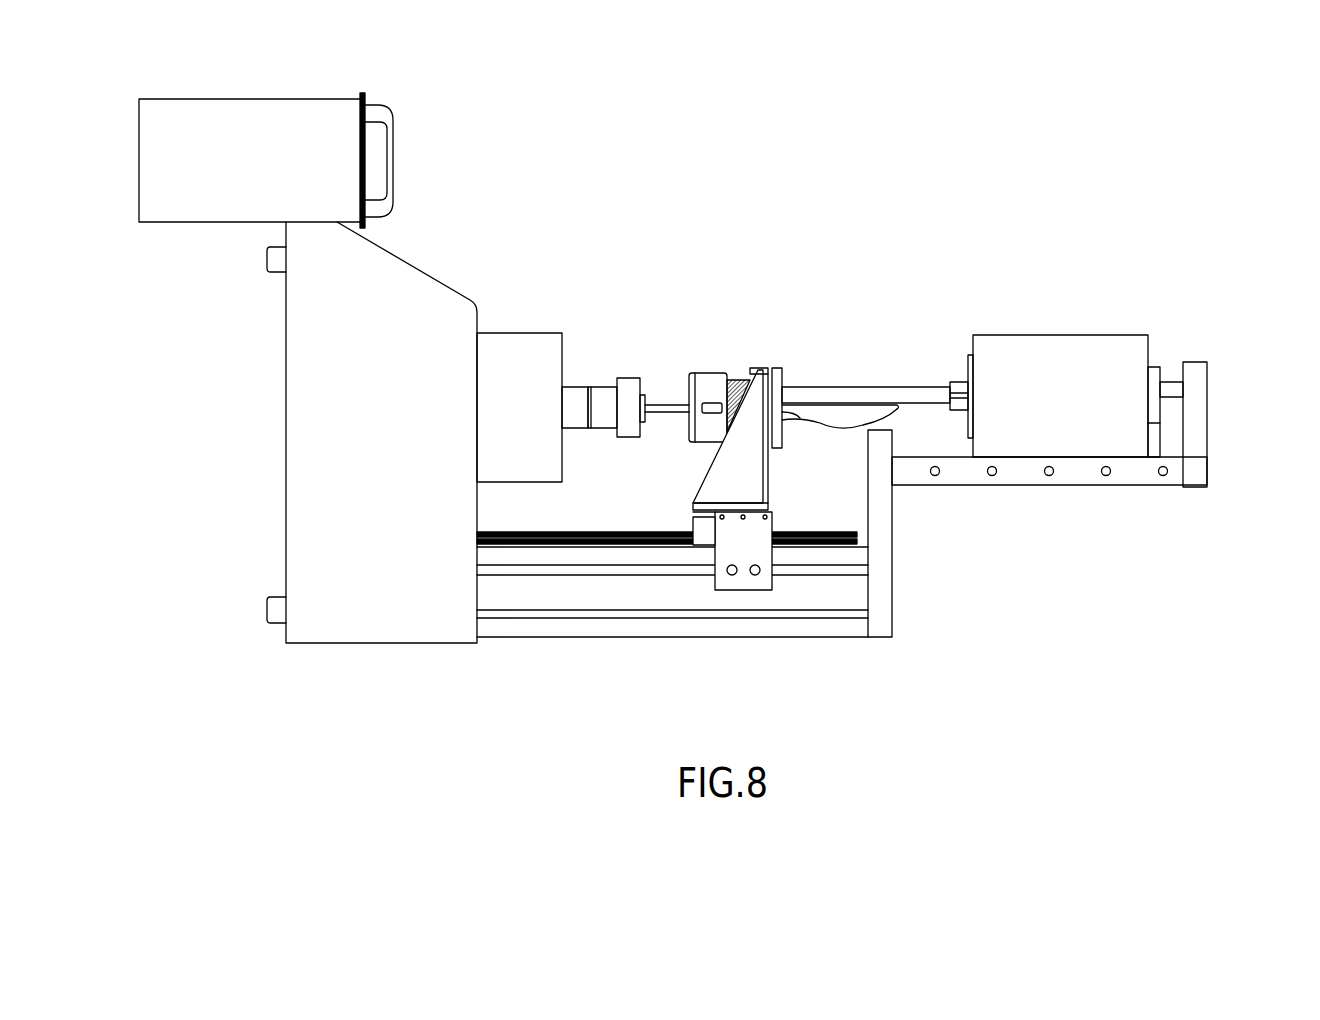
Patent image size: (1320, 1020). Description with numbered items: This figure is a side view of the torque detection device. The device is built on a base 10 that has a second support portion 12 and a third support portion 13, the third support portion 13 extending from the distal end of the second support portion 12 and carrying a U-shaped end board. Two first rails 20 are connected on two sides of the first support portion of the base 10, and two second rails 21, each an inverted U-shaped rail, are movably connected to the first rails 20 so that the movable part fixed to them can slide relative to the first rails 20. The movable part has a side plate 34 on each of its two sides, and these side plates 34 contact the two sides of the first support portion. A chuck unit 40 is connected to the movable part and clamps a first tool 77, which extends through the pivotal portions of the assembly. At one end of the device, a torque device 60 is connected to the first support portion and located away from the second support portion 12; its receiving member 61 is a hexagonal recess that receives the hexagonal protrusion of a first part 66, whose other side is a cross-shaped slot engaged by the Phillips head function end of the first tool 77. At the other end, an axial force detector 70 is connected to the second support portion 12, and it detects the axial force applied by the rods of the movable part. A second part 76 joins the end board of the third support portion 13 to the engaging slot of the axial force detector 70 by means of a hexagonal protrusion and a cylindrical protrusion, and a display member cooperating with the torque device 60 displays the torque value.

The base 10 is at (805, 632).
The second support portion 12 is at (1104, 487).
The third support portion 13 is at (1207, 413).
The first rails 20 is at (608, 543).
The second rails 21 is at (700, 528).
The side plate 34 is at (732, 580).
The chuck unit 40 is at (710, 378).
The torque device 60 is at (332, 447).
The receiving member 61 is at (603, 403).
The first part 66 is at (632, 383).
The axial force detector 70 is at (1023, 347).
The second part 76 is at (1150, 370).
The first tool 77 is at (835, 418).